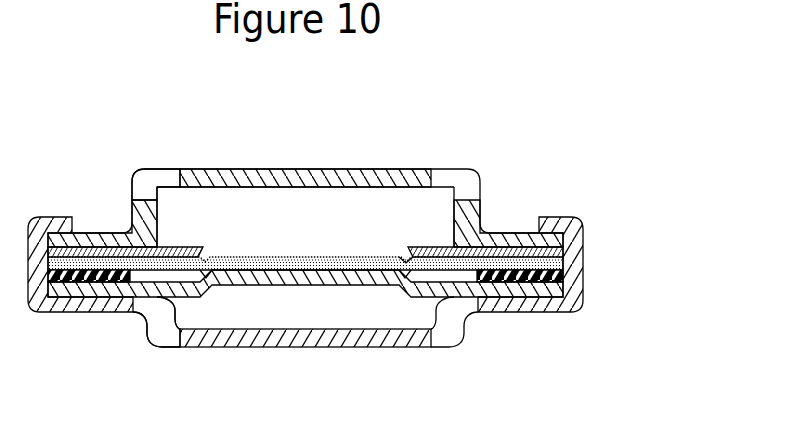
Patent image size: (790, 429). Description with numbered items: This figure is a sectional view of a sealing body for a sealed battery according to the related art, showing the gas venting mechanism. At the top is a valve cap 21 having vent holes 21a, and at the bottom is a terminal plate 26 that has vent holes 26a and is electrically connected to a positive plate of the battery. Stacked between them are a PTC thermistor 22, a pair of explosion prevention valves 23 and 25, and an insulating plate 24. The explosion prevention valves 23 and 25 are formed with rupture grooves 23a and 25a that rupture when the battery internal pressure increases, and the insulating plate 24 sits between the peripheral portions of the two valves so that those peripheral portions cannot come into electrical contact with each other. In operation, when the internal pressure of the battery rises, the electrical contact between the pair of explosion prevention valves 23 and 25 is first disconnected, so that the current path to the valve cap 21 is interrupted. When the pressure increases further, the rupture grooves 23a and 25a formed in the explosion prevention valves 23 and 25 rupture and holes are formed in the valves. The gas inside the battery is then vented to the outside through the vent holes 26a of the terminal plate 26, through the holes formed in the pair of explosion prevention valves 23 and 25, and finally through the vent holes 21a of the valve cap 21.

The valve cap 21 is at (400, 177).
The vent holes 21a is at (145, 188).
The PTC thermistor 22 is at (562, 249).
The explosion prevention valve 23 is at (563, 264).
The rupture groove 23a is at (410, 261).
The insulating plate 24 is at (497, 282).
The explosion prevention valve 25 is at (496, 290).
The rupture groove 25a is at (212, 276).
The terminal plate 26 is at (340, 342).
The vent holes 26a is at (160, 326).